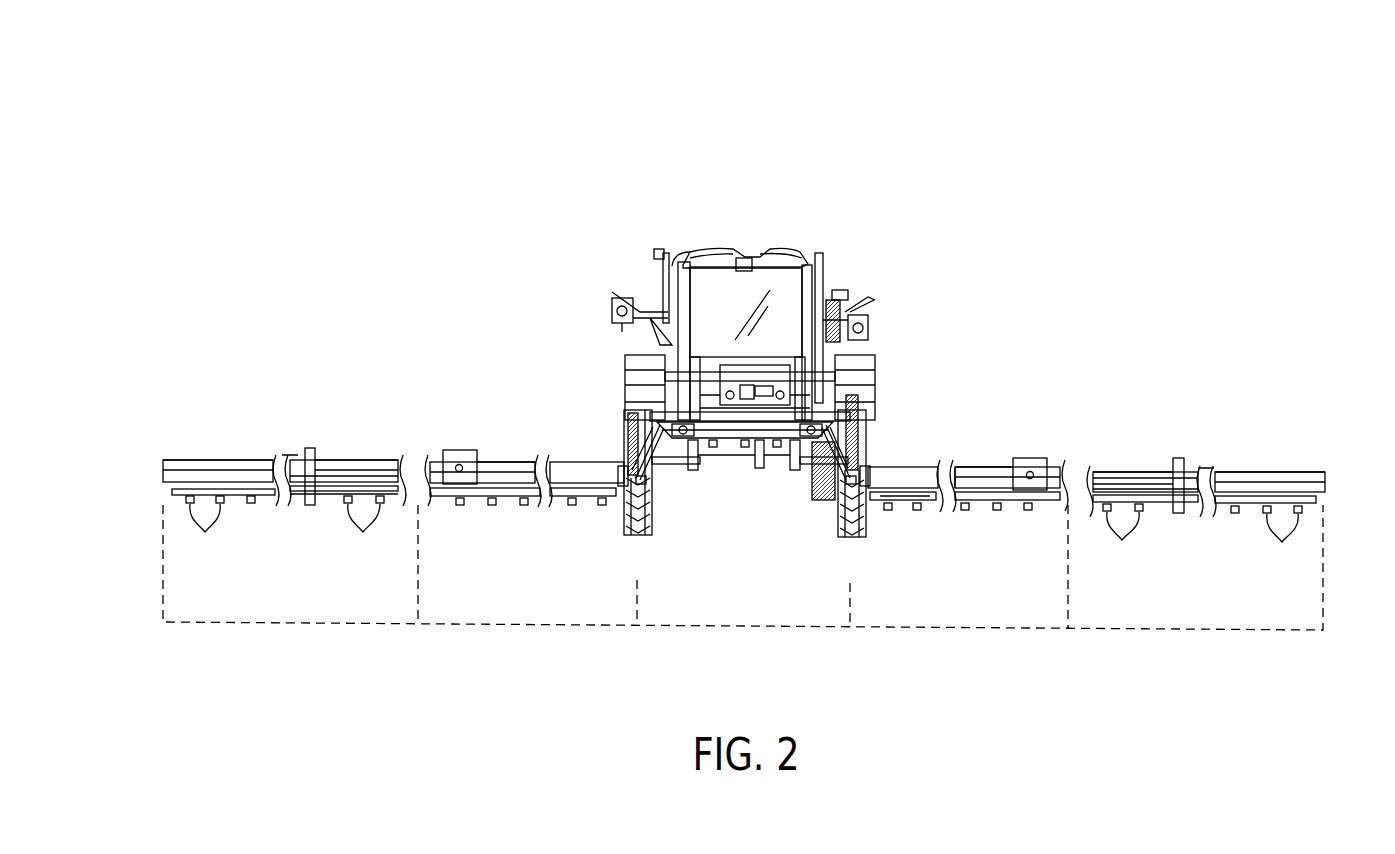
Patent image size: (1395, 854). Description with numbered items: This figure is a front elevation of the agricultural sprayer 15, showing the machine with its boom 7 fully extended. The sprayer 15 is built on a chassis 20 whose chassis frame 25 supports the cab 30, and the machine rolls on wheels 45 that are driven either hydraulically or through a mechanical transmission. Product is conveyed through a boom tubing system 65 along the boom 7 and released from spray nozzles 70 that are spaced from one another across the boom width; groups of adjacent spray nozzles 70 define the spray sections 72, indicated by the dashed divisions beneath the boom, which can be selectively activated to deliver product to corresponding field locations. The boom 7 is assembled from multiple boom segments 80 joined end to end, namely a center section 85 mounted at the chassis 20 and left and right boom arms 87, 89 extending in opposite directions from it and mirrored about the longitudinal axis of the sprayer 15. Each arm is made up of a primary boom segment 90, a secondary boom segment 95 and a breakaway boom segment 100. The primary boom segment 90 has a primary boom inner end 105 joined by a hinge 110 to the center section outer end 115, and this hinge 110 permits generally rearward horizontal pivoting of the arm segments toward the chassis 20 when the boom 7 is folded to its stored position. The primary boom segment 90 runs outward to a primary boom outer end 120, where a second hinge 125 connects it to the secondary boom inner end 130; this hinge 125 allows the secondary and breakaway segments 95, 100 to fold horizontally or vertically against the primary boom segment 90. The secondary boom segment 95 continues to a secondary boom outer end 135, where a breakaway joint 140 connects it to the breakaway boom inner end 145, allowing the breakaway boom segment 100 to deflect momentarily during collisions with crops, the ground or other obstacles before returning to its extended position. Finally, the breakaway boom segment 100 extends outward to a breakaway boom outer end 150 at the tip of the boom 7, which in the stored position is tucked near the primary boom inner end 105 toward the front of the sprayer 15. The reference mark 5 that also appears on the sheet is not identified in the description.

The boom assembly 5 is at (1208, 322).
The boom 7 is at (968, 458).
The sprayer 15 is at (722, 106).
The chassis 20 is at (785, 440).
The chassis frame 25 is at (766, 385).
The cab 30 is at (738, 244).
The wheels 45 is at (645, 540).
The boom tubing system 65 is at (942, 502).
The spray nozzles 70 is at (1003, 576).
The spray sections 72 is at (235, 593).
The boom segments 80 is at (212, 428).
The center section 85 is at (735, 478).
The left boom arm 87 is at (1258, 352).
The right boom arm 89 is at (455, 330).
The primary boom segment 90 is at (578, 412).
The secondary boom segment 95 is at (360, 415).
The breakaway boom segment 100 is at (233, 447).
The primary boom inner end 105 is at (590, 480).
The hinge 110 is at (620, 482).
The center section outer end 115 is at (652, 470).
The primary boom outer end 120 is at (507, 472).
The hinge 125 is at (463, 478).
The secondary boom inner end 130 is at (433, 472).
The secondary boom outer end 135 is at (323, 470).
The breakaway joint 140 is at (308, 507).
The breakaway boom inner end 145 is at (282, 453).
The breakaway boom outer end 150 is at (190, 460).